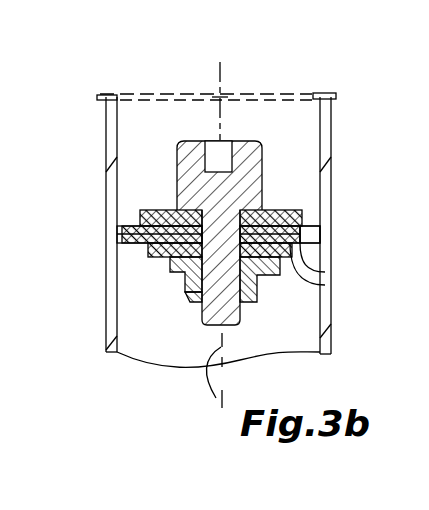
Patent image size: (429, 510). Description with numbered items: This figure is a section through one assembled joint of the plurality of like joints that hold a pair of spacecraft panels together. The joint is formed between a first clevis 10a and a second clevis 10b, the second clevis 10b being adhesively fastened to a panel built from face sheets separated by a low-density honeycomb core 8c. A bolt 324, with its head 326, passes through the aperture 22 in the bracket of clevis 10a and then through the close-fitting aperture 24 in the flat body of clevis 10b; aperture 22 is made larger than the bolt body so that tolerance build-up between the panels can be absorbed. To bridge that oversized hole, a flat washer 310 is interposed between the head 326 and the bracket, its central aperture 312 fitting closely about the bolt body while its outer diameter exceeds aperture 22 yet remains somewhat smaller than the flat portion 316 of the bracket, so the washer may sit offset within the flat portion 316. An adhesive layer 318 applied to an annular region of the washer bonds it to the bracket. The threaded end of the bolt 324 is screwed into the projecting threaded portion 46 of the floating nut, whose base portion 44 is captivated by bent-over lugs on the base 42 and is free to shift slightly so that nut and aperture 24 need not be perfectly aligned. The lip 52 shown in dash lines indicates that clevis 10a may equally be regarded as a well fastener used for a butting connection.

The first clevis 10a is at (332, 114).
The second clevis 10b is at (322, 249).
The lip 52 is at (318, 93).
The head 326 is at (224, 138).
The bolt 324 is at (213, 196).
The adhesive layer 318 is at (147, 215).
The central aperture 312 is at (268, 210).
The flat washer 310 is at (297, 213).
The aperture 22 is at (132, 243).
The flat portion 316 is at (321, 247).
The base 42 is at (166, 260).
The base portion 44 is at (186, 287).
The projecting threaded portion 46 is at (198, 298).
The aperture 24 is at (333, 273).
The honeycomb core 8c is at (202, 373).